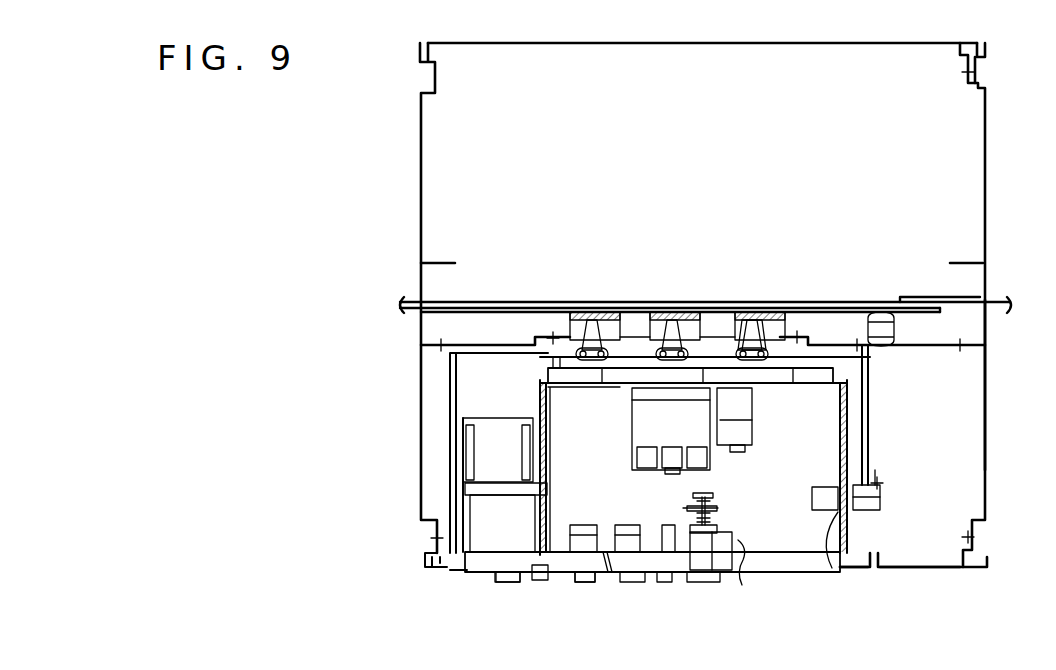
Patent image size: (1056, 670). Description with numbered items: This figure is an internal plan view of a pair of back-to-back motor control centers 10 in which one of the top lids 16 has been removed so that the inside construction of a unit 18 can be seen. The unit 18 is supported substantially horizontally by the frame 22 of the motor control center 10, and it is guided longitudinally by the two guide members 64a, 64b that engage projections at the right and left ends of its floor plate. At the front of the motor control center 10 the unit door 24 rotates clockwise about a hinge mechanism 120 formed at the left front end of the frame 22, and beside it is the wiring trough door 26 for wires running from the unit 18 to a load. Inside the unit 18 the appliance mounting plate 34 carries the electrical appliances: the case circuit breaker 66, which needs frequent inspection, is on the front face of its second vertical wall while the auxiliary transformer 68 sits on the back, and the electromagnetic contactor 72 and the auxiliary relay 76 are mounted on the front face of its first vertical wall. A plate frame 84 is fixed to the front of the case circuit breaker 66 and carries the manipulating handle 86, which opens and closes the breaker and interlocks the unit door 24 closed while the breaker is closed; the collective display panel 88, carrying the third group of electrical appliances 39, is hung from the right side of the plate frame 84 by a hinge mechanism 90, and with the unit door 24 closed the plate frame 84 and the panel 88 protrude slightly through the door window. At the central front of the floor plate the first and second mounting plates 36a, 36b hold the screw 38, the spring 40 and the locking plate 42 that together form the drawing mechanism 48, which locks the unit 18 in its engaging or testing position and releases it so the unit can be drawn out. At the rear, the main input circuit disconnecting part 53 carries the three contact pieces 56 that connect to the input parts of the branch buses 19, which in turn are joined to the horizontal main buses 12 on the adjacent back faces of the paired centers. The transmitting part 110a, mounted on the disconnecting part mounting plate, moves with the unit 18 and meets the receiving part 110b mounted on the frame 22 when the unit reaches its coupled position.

The motor control center 10 is at (962, 159).
The main buses 12 is at (506, 302).
The top lid 16 is at (540, 90).
The unit 18 is at (815, 418).
The branch buses 19 is at (592, 320).
The frame 22 is at (989, 383).
The unit door 24 is at (858, 570).
The wiring trough door 26 is at (943, 570).
The appliance mounting plate 34 is at (537, 400).
The first mounting plate 36a is at (733, 531).
The second mounting plate 36b is at (715, 496).
The screw 38 is at (706, 555).
The third group of electrical appliances 39 is at (645, 585).
The spring 40 is at (718, 510).
The locking plate 42 is at (690, 508).
The drawing mechanism 48 is at (742, 586).
The main input circuit disconnecting part 53 is at (806, 300).
The contact pieces 56 is at (745, 320).
The guide member 64a is at (450, 378).
The guide member 64b is at (860, 376).
The case circuit breaker 66 is at (481, 540).
The auxiliary transformer 68 is at (465, 447).
The electromagnetic contactor 72 is at (634, 441).
The auxiliary relay 76 is at (748, 410).
The plate frame 84 is at (538, 578).
The manipulating handle 86 is at (510, 582).
The collective display panel 88 is at (567, 578).
The hinge mechanism 90 is at (583, 550).
The transmitting part 110a is at (826, 568).
The receiving part 110b is at (882, 498).
The hinge mechanism 120 is at (442, 570).